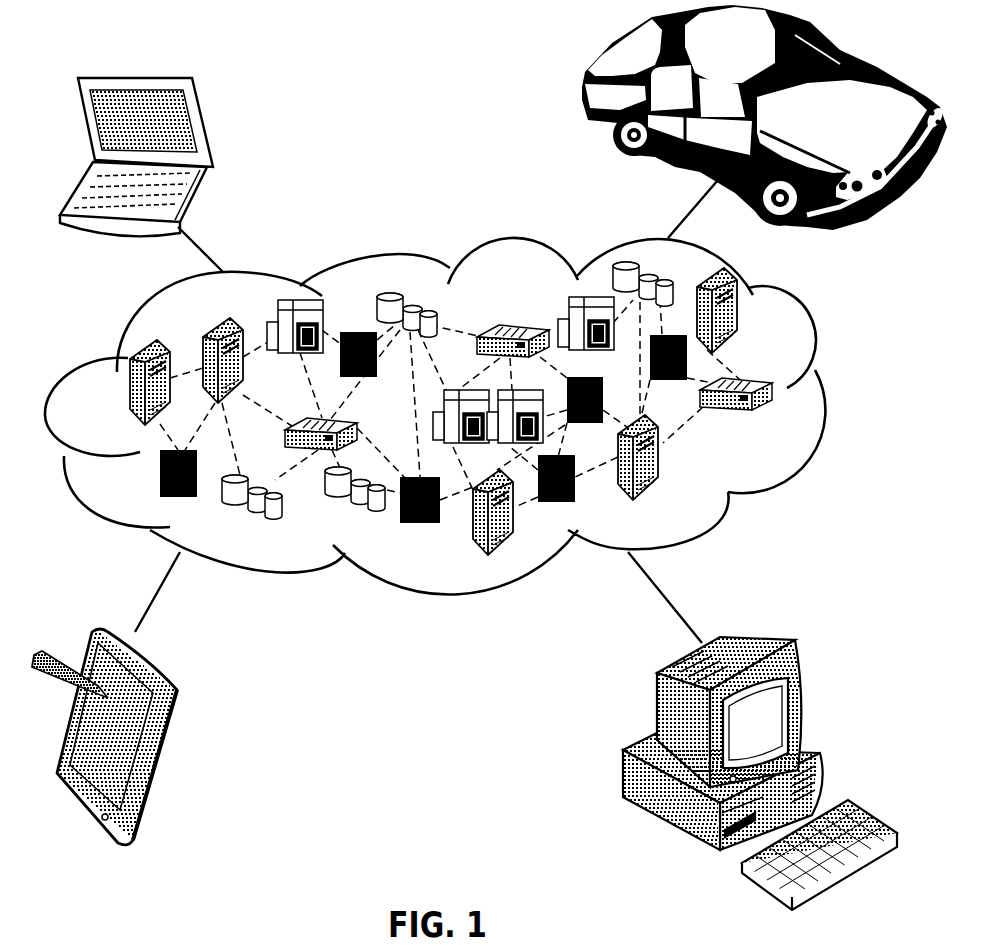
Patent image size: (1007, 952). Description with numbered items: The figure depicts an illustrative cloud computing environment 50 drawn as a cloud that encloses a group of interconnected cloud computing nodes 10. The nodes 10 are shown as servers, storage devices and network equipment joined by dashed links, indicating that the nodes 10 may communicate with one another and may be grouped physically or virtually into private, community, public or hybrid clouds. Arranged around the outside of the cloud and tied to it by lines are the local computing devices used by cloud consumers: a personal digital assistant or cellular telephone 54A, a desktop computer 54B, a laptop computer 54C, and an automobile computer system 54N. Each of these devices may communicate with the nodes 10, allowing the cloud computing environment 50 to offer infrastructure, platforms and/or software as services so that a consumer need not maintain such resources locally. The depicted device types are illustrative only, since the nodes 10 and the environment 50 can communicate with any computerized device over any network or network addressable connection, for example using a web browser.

The cloud computing nodes 10 is at (489, 457).
The cloud computing environment 50 is at (833, 391).
The personal digital assistant or cellular telephone 54A is at (170, 722).
The desktop computer 54B is at (768, 633).
The laptop computer 54C is at (207, 120).
The automobile computer system 54N is at (583, 92).